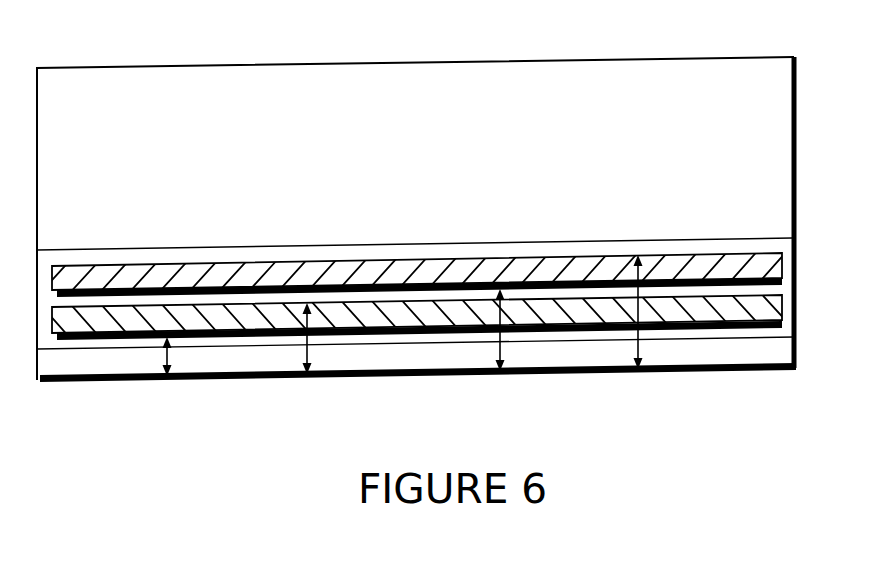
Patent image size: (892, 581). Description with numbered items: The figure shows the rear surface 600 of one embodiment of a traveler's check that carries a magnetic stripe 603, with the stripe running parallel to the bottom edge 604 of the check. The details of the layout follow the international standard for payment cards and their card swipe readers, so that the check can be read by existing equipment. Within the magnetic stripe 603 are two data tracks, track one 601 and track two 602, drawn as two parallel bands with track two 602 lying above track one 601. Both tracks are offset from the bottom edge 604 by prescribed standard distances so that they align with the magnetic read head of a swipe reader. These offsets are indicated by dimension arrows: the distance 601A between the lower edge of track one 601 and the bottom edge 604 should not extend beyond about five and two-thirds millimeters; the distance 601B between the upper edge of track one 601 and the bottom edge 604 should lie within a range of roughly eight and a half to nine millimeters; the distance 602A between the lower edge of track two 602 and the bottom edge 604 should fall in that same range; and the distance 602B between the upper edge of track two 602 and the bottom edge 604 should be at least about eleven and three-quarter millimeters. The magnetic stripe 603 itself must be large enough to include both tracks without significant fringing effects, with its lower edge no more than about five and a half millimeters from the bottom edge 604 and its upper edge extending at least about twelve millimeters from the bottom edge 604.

The rear surface 600 is at (332, 78).
The track one 601 is at (782, 308).
The track two 602 is at (782, 263).
The magnetic stripe 603 is at (208, 248).
The bottom edge 604 is at (712, 368).
The distance between lower edge of track one and bottom edge 601A is at (160, 353).
The distance between upper edge of track one and bottom edge 601B is at (305, 350).
The distance between lower edge of track two and bottom edge 602A is at (493, 348).
The distance between upper edge of track two and bottom edge 602B is at (633, 347).